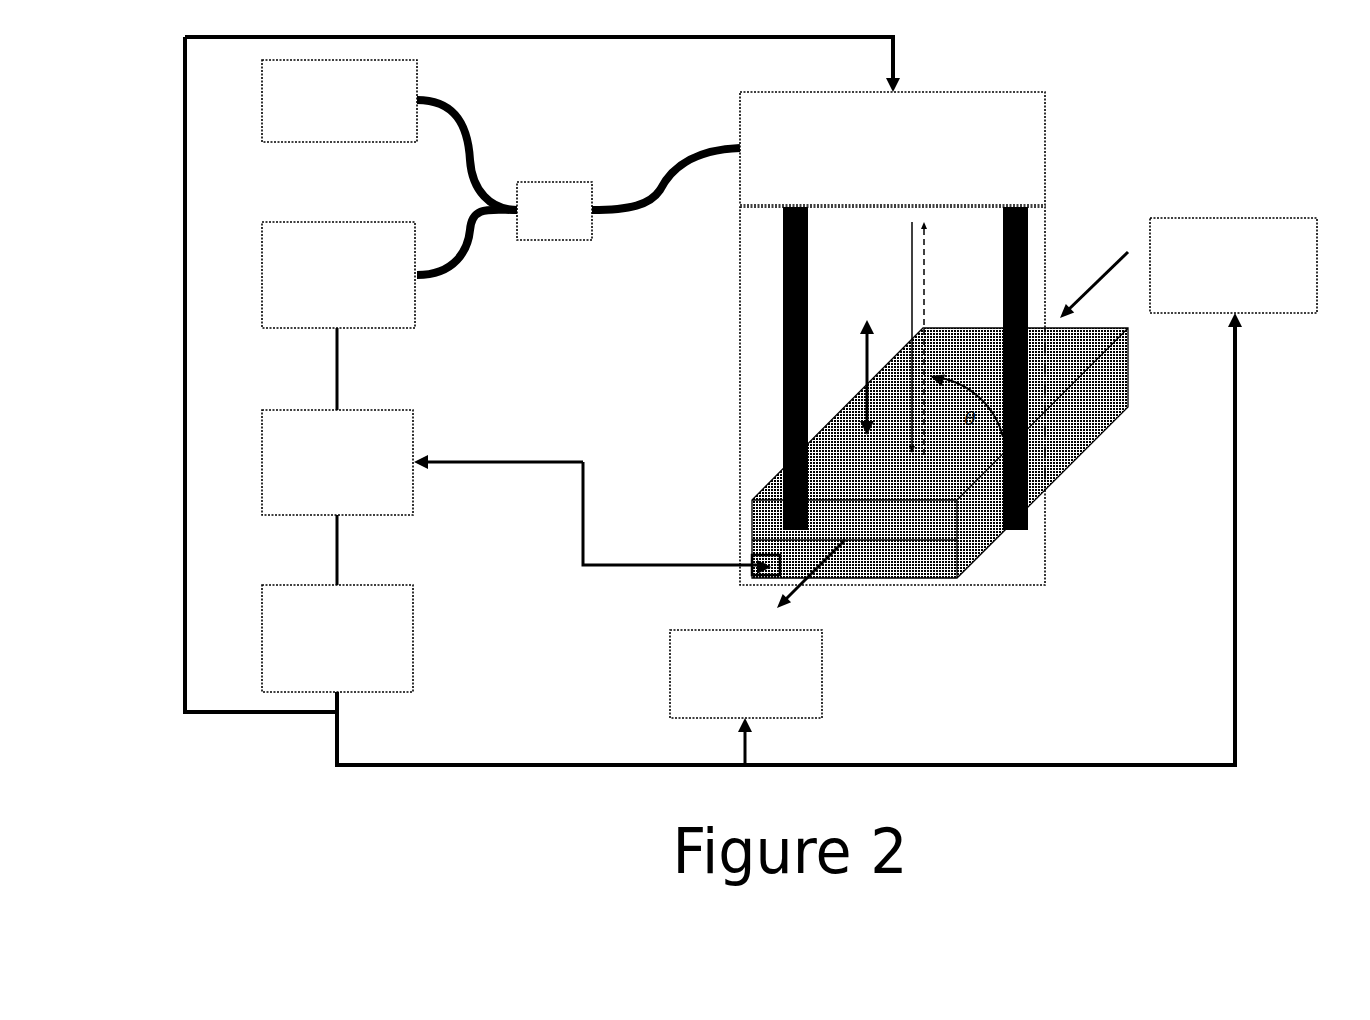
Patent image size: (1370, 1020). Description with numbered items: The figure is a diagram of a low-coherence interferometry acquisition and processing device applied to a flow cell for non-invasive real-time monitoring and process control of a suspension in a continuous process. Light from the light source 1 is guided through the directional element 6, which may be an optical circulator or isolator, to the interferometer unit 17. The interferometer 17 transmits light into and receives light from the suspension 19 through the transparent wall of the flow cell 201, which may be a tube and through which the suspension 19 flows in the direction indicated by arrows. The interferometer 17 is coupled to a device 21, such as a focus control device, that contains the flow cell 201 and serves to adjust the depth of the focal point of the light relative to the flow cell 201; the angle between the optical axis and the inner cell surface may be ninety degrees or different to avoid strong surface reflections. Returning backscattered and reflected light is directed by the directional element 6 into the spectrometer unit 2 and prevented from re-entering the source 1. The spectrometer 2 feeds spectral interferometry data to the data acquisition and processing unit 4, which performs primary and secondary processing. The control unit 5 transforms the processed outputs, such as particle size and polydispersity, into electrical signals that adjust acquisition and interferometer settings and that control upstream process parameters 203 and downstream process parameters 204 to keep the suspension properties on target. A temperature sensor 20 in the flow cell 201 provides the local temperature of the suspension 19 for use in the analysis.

The light source 1 is at (339, 101).
The spectrometer unit 2 is at (338, 275).
The directional element 6 is at (554, 211).
The data acquisition and processing unit 4 is at (337, 462).
The control unit 5 is at (337, 638).
The interferometer unit 17 is at (892, 148).
The focus control device 21 is at (737, 285).
The temperature sensor 20 is at (752, 557).
The suspension 19 is at (895, 542).
The flow cell 201 is at (1082, 423).
The upstream process parameters 203 is at (1233, 265).
The downstream process parameters 204 is at (746, 674).